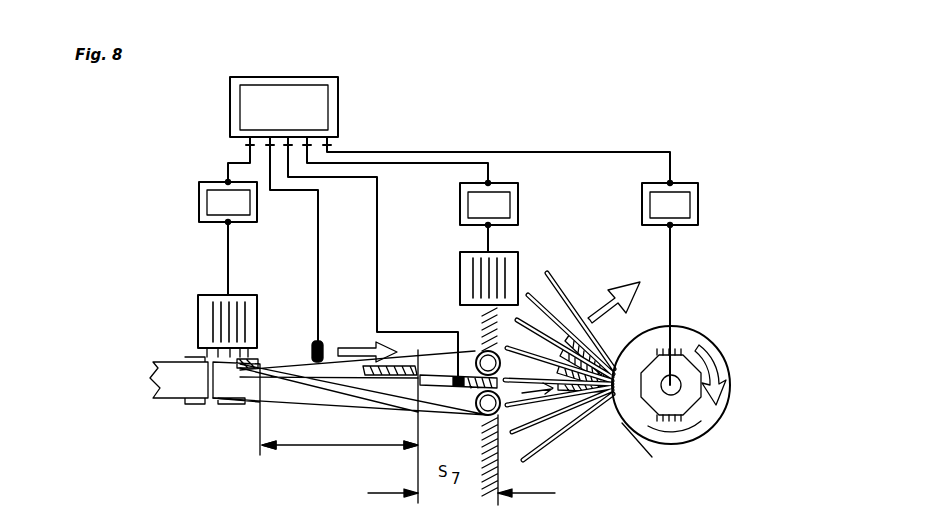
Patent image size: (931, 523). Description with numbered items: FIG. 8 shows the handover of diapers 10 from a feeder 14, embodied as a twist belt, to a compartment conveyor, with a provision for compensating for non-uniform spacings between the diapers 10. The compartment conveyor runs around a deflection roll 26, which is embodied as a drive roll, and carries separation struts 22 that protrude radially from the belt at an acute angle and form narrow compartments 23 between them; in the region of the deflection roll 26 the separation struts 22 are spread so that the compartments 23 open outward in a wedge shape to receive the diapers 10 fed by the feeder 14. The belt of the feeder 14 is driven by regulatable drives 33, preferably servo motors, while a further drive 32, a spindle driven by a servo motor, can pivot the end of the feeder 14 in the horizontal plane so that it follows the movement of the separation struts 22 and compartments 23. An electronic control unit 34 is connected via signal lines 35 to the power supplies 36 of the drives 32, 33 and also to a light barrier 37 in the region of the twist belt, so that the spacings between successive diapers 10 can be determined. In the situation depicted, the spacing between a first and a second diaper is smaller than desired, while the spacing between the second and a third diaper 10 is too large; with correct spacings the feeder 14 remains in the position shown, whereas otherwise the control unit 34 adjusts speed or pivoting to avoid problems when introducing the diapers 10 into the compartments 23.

The diaper 10 is at (400, 358).
The feeder 14 is at (313, 466).
The separation strut 22 is at (558, 268).
The compartment 23 is at (520, 397).
The deflection roll 26 is at (683, 345).
The drive 32 is at (463, 275).
The drive 33 is at (205, 337).
The control unit 34 is at (316, 67).
The signal line 35 is at (240, 163).
The power supply 36 is at (215, 205).
The light barrier 37 is at (312, 352).